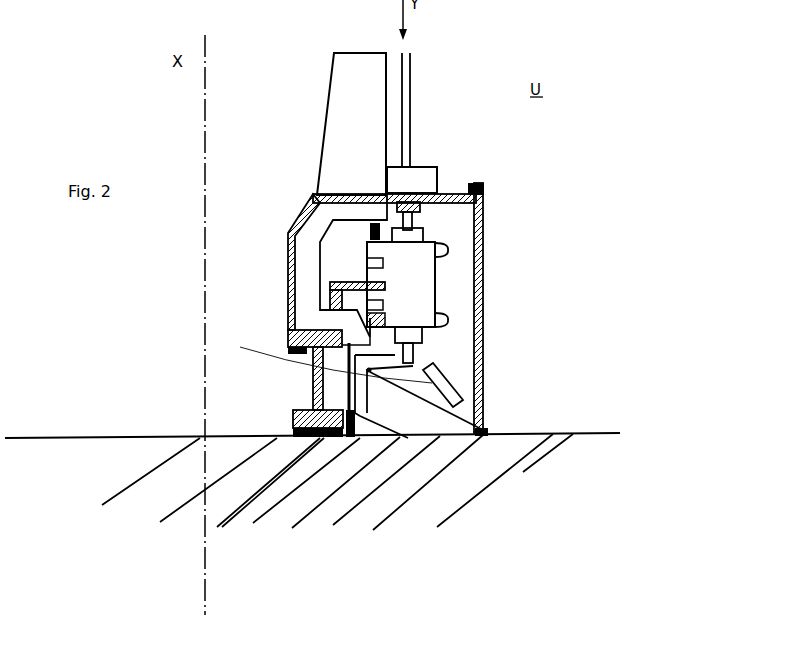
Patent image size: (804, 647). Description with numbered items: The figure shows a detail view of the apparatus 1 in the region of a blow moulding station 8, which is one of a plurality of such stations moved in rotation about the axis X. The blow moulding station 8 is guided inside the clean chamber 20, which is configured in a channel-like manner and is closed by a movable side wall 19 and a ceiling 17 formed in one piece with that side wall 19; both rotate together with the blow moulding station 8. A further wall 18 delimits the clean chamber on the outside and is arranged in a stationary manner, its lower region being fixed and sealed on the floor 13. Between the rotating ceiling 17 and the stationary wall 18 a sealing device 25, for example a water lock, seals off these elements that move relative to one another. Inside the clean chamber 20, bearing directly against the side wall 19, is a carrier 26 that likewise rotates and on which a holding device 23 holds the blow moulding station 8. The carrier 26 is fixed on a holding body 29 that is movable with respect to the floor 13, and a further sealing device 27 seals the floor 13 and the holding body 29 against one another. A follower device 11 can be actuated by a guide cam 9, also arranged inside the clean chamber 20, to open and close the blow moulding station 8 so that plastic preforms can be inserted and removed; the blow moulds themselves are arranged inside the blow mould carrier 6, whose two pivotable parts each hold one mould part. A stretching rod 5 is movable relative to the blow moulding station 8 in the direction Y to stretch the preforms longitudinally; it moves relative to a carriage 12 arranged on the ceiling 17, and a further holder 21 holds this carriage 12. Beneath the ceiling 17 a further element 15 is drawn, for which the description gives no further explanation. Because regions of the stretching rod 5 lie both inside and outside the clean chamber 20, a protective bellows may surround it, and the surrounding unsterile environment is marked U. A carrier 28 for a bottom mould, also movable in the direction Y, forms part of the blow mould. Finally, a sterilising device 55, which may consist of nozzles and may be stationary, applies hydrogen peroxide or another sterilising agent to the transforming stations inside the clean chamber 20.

The apparatus 1 is at (288, 106).
The stretching rod 5 is at (412, 118).
The blow mould carrier 6 is at (423, 305).
The blow moulding station 8 is at (423, 268).
The guide cam 9 is at (460, 458).
The follower device 11 is at (480, 423).
The carriage 12 is at (430, 172).
The floor 13 is at (523, 472).
The fastening nut 15 is at (436, 213).
The ceiling 17 is at (358, 194).
The wall 18 is at (485, 247).
The side wall 19 is at (287, 269).
The clean chamber 20 is at (457, 375).
The holder 21 is at (373, 96).
The holding device 23 is at (353, 281).
The sealing device 25 is at (483, 186).
The carrier 26 is at (305, 315).
The sealing device 27 is at (292, 429).
The carrier for bottom mould 28 is at (417, 355).
The holding body 29 is at (312, 392).
The sterilising device 55 is at (332, 356).